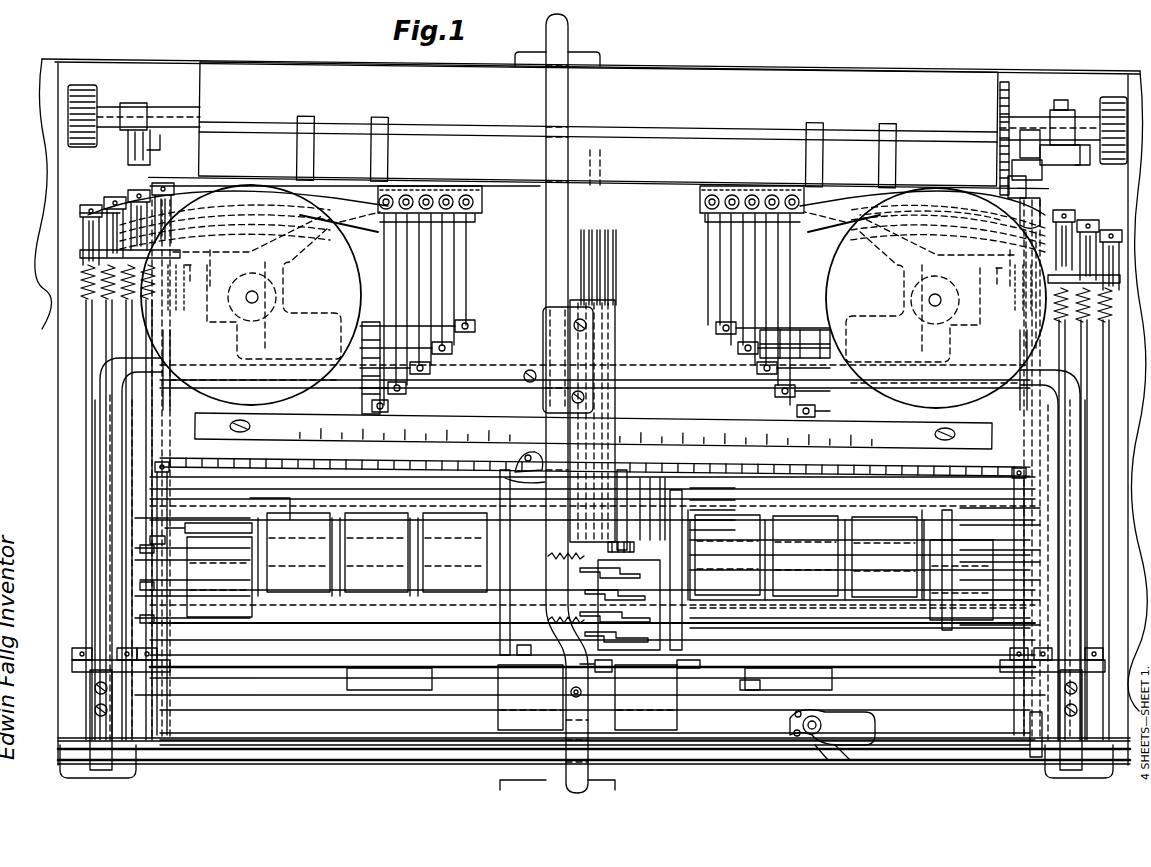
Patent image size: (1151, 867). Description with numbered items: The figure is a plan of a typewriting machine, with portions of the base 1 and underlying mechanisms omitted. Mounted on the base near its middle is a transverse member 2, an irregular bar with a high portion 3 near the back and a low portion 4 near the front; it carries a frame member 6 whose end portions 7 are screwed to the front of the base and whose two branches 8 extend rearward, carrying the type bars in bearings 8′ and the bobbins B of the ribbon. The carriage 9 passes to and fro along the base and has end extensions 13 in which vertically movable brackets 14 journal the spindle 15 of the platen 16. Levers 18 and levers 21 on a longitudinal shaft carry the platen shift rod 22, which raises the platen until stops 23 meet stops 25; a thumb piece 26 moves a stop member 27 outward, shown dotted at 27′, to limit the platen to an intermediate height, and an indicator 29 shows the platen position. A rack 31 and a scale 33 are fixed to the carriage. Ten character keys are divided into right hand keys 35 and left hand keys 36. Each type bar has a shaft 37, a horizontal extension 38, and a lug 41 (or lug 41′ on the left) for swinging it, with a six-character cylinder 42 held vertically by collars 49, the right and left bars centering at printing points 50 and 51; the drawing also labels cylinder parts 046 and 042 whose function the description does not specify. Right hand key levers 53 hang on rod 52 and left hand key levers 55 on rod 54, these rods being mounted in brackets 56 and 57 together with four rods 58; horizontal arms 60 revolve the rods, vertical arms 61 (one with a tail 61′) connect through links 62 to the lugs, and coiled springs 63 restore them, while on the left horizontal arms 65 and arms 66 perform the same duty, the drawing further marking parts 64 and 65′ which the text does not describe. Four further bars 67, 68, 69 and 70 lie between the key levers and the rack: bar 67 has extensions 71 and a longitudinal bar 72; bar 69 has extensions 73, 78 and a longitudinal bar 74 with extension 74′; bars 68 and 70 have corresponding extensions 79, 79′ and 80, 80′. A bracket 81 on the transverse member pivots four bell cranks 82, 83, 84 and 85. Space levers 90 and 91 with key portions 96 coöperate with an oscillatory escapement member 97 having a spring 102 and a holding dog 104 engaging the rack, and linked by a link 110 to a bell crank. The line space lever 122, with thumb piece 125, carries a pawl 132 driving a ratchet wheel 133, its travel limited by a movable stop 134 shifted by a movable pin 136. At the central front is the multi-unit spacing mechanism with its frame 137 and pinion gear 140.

The base 1 is at (591, 412).
The transverse member 2 is at (260, 410).
The high portion 3 is at (546, 205).
The low portion 4 is at (545, 760).
The frame member 6 is at (522, 376).
The end portions 7 is at (100, 476).
The branches 8 is at (280, 255).
The bearings 8′ is at (590, 228).
The carriage 9 is at (512, 80).
The end extensions 13 is at (1065, 110).
The brackets 14 is at (135, 110).
The spindle 15 is at (150, 108).
The platen 16 is at (599, 125).
The levers 18 is at (150, 129).
The levers 21 is at (165, 718).
The platen shift rod 22 is at (225, 750).
The stops 23 is at (152, 143).
The stops 25 is at (160, 155).
The thumb piece 26 is at (820, 750).
The stop member 27 is at (870, 727).
The stop member in outward position 27′ is at (850, 760).
The indicator 29 is at (1060, 112).
The rack 31 is at (840, 431).
The scale 33 is at (830, 430).
The right hand character keys 35 is at (835, 598).
The left hand character keys 36 is at (245, 620).
The shaft 37 is at (472, 214).
The horizontal extension 38 is at (450, 252).
The lug 41 is at (710, 188).
The lugs 41′ is at (470, 188).
The cylinder 42 is at (452, 348).
The type bar block 046 is at (472, 328).
The type bar block 042 is at (430, 368).
The collars 49 is at (372, 205).
The printing point 50 is at (605, 170).
The printing point 51 is at (585, 172).
The rod 52 is at (1020, 405).
The right hand key levers 53 is at (1040, 525).
The rod 54 is at (168, 405).
The left hand key levers 55 is at (160, 548).
The brackets 56 is at (72, 690).
The brackets 57 is at (205, 282).
The rods 58 is at (1040, 368).
The horizontal arms 60 is at (1040, 550).
The vertical arms 61 is at (1105, 250).
The tail 61′ is at (1040, 562).
The links 62 is at (975, 222).
The coiled springs 63 is at (105, 300).
The left springs 64 is at (130, 338).
The horizontal arms 65 is at (160, 518).
The key lever 65′ is at (155, 540).
The arms 66 is at (120, 215).
The bar 67 is at (648, 478).
The bar 68 is at (675, 490).
The bar 69 is at (712, 488).
The bar 70 is at (745, 488).
The extensions 71 is at (700, 528).
The longitudinal bar 72 is at (892, 640).
The extensions 73 is at (688, 540).
The longitudinal bar 74 is at (790, 512).
The extension 74′ is at (1040, 508).
The extensions 78 is at (178, 478).
The extension 79 is at (330, 660).
The extension 79′ is at (268, 655).
The extension 80 is at (340, 500).
The extension 80′ is at (210, 520).
The bracket 81 is at (595, 323).
The bell crank 82 is at (612, 302).
The bell crank 83 is at (608, 276).
The bell crank 84 is at (588, 263).
The bell crank 85 is at (580, 241).
The space lever 90 is at (750, 692).
The space lever 91 is at (612, 676).
The key portions 96 is at (592, 688).
The oscillatory member 97 is at (515, 458).
The spring 102 is at (593, 421).
The holding dog 104 is at (480, 462).
The link 110 is at (500, 660).
The line space lever 122 is at (1025, 228).
The thumb piece 125 is at (1030, 735).
The pawl 132 is at (1005, 174).
The ratchet wheel 133 is at (1004, 82).
The movable stop 134 is at (1020, 170).
The movable pin 136 is at (1082, 155).
The frame 137 is at (604, 601).
The pinion gear 140 is at (630, 548).
The bobbins B is at (593, 296).